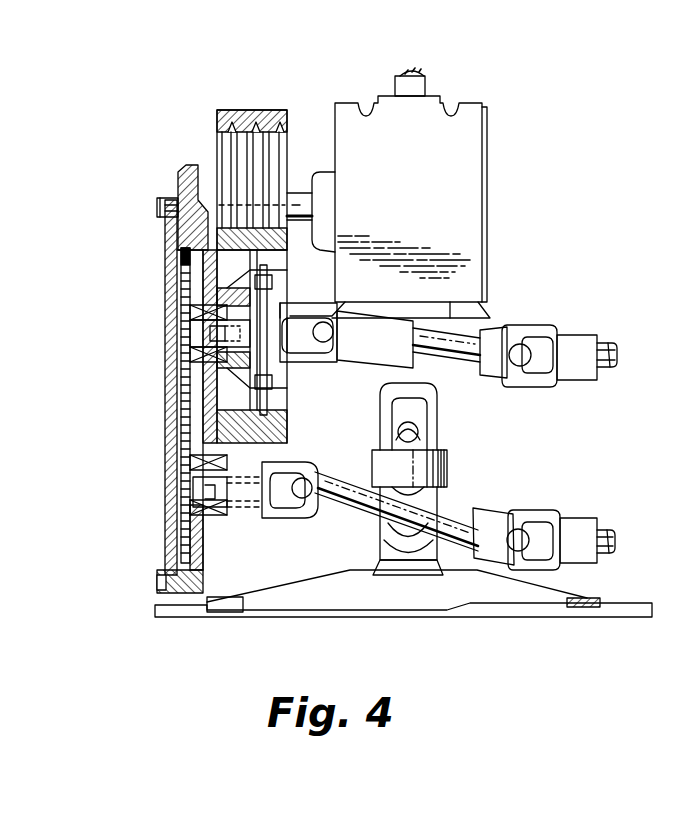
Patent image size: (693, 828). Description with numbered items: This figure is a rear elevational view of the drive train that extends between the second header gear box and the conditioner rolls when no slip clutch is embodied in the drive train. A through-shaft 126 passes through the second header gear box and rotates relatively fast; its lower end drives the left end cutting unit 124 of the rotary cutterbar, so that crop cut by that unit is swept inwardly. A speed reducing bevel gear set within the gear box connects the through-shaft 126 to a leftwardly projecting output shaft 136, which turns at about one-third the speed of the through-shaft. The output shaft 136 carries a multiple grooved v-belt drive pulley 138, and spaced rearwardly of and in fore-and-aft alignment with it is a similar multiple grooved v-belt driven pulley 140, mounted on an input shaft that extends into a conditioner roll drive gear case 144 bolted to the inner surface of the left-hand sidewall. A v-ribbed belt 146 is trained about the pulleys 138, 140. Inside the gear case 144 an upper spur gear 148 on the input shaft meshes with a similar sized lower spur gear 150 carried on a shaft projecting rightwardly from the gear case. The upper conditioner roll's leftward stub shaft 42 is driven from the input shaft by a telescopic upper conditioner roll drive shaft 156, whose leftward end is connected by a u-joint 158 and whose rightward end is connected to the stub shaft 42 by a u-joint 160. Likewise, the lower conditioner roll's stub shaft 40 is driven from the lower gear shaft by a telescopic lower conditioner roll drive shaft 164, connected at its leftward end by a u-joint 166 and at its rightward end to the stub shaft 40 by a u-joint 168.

The stub shaft 40 is at (610, 533).
The stub shaft 42 is at (610, 342).
The left end cutting unit 124 is at (606, 594).
The through-shaft 126 is at (428, 85).
The output shaft 136 is at (308, 182).
The v-belt drive pulley 138 is at (288, 145).
The v-belt driven pulley 140 is at (290, 427).
The conditioner roll drive gear case 144 is at (195, 168).
The v-ribbed belt 146 is at (253, 110).
The upper spur gear 148 is at (172, 277).
The lower spur gear 150 is at (172, 537).
The upper conditioner roll drive shaft 156 is at (462, 365).
The u-joint 158 is at (314, 362).
The u-joint 160 is at (568, 387).
The lower conditioner roll drive shaft 164 is at (452, 503).
The u-joint 166 is at (293, 518).
The u-joint 168 is at (546, 510).